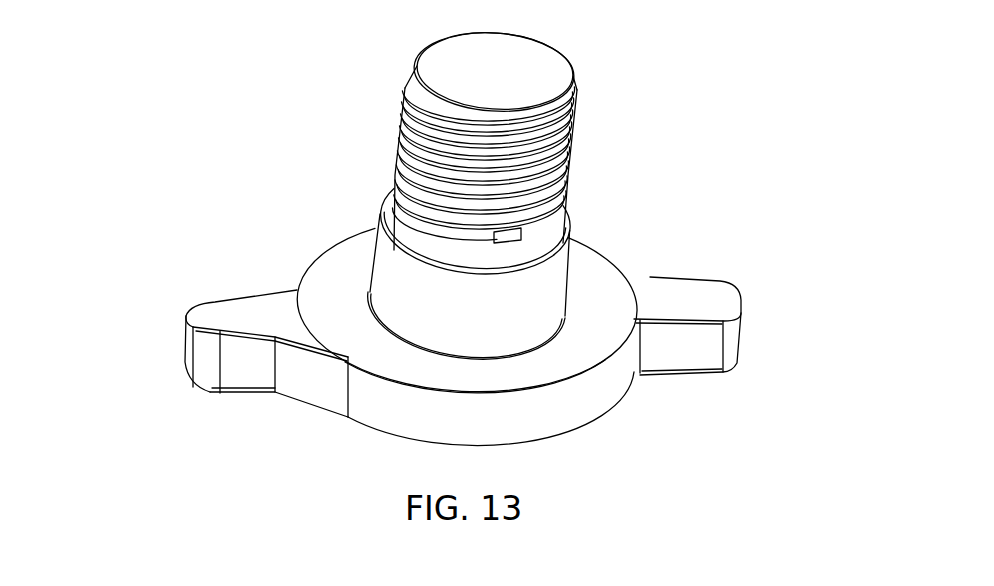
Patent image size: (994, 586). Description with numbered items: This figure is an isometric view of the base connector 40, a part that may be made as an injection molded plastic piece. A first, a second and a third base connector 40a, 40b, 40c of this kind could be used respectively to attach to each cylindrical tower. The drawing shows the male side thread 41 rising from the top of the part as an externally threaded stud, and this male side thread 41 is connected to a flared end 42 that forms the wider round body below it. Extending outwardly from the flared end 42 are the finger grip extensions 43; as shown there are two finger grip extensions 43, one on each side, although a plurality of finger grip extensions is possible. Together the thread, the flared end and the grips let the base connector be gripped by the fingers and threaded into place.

The base connector 40 is at (453, 246).
The first base connector 40a is at (453, 246).
The second base connector 40b is at (453, 246).
The third base connector 40c is at (276, 144).
The male side thread 41 is at (577, 127).
The flared end 42 is at (558, 357).
The finger grip extension 43 is at (216, 305).